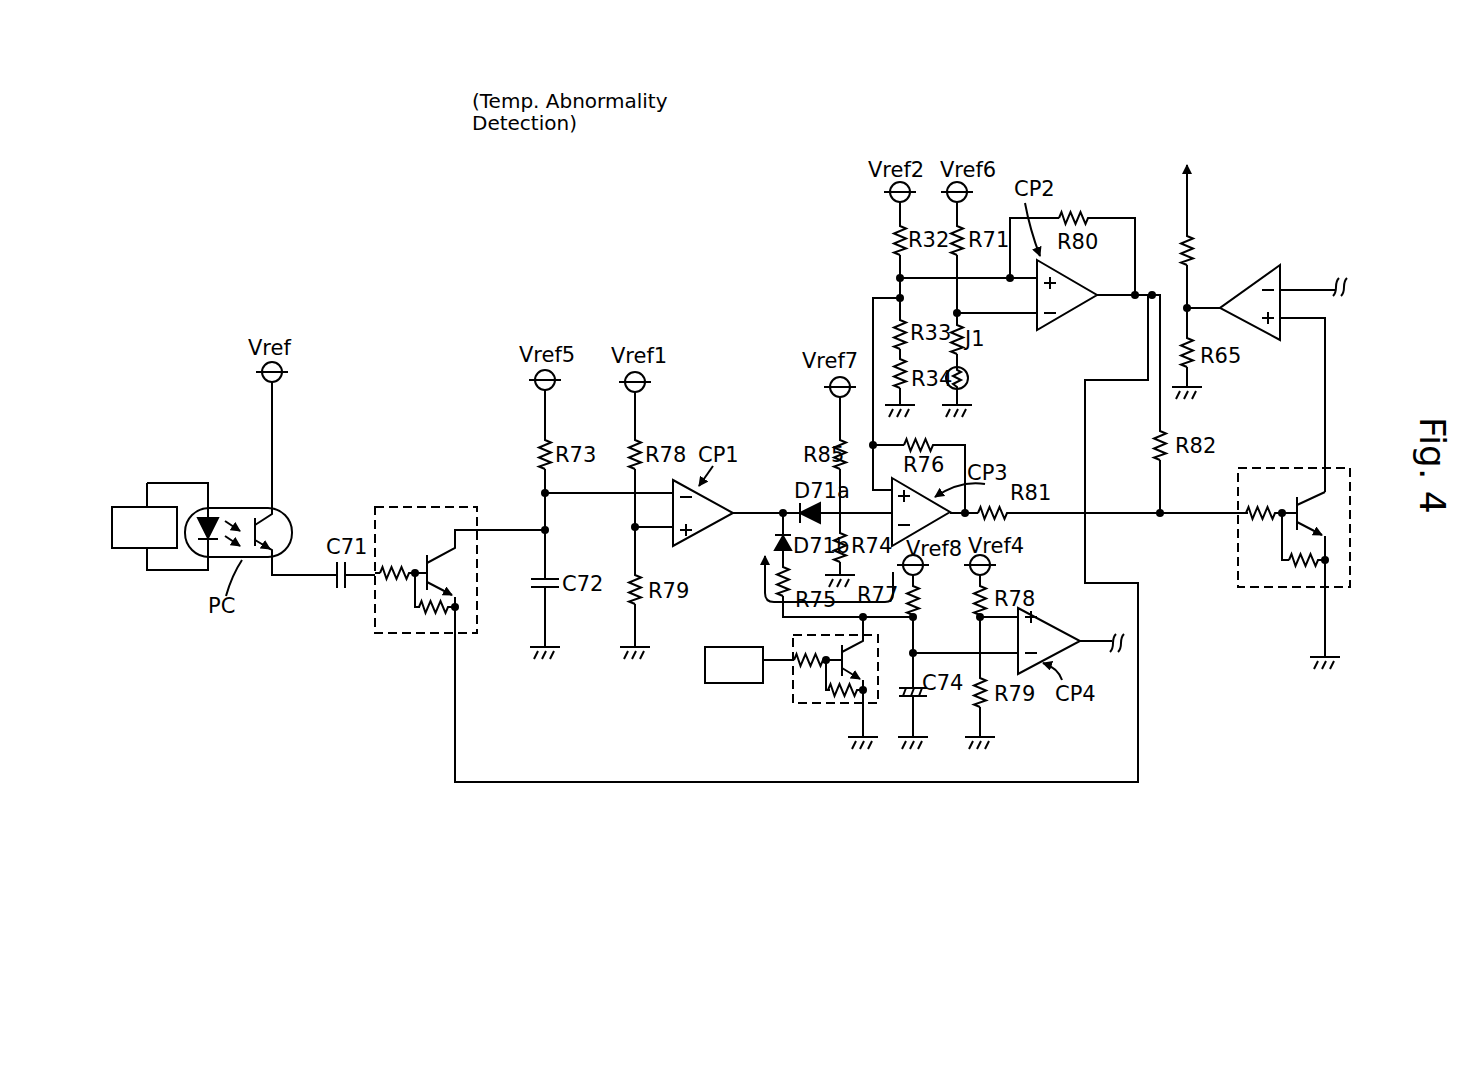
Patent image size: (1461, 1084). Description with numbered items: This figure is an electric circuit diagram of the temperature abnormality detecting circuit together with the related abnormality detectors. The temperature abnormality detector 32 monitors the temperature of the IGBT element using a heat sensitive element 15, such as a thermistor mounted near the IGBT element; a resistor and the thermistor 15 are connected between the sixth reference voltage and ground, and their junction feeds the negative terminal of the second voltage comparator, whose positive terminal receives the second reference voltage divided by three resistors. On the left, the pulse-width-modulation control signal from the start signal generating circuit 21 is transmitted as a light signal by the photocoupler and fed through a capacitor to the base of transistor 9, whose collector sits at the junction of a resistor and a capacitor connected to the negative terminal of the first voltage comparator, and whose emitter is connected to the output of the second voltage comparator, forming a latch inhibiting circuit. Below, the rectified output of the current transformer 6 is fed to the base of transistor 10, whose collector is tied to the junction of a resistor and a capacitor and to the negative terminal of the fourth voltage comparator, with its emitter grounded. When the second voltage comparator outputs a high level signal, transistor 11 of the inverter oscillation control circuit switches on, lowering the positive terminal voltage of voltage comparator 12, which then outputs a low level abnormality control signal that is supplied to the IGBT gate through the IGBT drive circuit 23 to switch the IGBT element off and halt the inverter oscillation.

The start signal generating circuit 21 is at (132, 555).
The transistor 9 is at (420, 505).
The current transformer 6 is at (735, 685).
The transistor 10 is at (820, 708).
The transistor 11 is at (1278, 466).
The voltage comparator 12 is at (1283, 279).
The heat sensitive element 15 is at (968, 373).
The temperature abnormality detector 32 is at (1210, 222).
The IGBT drive circuit 23 is at (1180, 167).